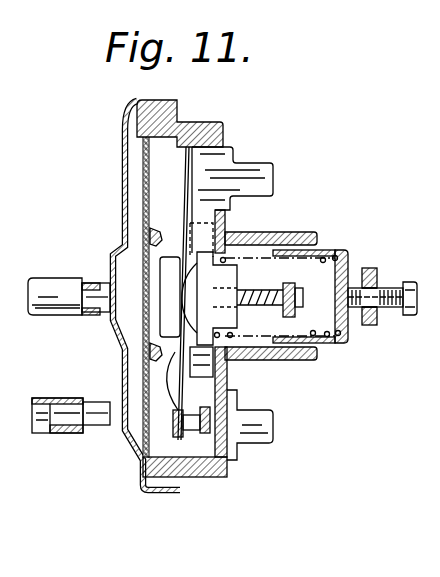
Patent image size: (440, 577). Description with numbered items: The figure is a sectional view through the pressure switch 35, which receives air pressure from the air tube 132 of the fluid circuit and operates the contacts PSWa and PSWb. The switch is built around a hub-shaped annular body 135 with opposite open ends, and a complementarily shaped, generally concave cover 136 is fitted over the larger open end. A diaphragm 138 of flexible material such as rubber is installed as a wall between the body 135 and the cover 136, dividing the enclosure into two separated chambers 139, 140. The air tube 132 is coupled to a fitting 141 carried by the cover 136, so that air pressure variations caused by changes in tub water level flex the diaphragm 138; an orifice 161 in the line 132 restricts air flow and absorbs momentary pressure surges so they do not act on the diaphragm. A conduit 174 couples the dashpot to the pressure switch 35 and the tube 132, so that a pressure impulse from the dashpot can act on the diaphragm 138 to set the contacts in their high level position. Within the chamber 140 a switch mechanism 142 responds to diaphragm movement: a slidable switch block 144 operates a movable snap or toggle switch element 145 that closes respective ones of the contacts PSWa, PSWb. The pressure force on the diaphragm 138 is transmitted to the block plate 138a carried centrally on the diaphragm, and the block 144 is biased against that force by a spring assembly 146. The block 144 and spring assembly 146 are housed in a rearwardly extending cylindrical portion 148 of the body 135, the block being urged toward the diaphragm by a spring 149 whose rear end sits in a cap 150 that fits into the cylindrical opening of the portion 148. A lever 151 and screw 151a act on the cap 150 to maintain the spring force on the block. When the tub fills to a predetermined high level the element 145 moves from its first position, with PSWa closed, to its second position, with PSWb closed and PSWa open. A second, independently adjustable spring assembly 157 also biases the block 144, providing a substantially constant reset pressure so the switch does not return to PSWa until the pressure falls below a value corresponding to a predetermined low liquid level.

The pressure switch 35 is at (298, 196).
The air tube 132 is at (47, 433).
The annular body 135 is at (223, 122).
The cover 136 is at (122, 148).
The diaphragm 138 is at (152, 184).
The block plate 138a is at (150, 177).
The chamber 139 is at (137, 208).
The chamber 140 is at (173, 141).
The fitting 141 is at (114, 394).
The switch mechanism 142 is at (243, 257).
The switch block 144 is at (167, 250).
The snap or toggle switch element 145 is at (160, 373).
The spring assembly 146 is at (354, 262).
The cylindrical portion 148 is at (297, 238).
The spring 149 is at (323, 263).
The cap 150 is at (347, 342).
The lever 151 is at (377, 272).
The screw 151a is at (395, 304).
The second spring assembly 157 is at (264, 285).
The orifice 161 is at (62, 396).
The conduit 174 is at (50, 285).
The pressure switch contact PSWa is at (185, 440).
The pressure switch contact PSWb is at (205, 400).